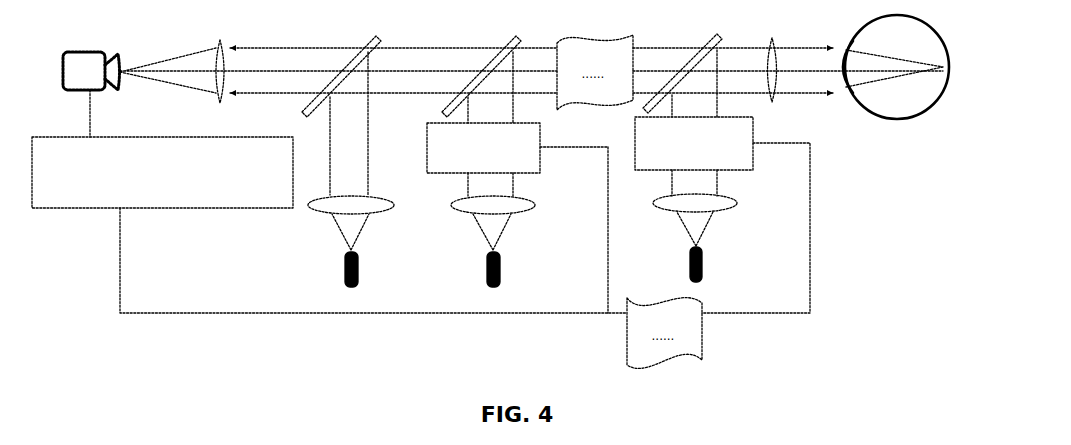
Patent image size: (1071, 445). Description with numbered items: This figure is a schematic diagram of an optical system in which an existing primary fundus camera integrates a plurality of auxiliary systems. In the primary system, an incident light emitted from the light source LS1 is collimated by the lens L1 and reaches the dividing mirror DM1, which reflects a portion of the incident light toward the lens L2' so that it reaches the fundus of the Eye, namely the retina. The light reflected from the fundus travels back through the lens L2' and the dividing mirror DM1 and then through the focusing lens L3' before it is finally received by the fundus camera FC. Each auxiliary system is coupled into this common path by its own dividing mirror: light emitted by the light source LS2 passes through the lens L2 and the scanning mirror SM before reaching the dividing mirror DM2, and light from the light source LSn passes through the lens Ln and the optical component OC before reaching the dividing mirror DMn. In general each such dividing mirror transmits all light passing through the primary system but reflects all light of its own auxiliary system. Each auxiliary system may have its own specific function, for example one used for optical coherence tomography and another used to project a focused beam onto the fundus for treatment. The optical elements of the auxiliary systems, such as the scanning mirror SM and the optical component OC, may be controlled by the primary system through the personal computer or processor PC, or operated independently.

The fundus camera FC is at (110, 78).
The personal computer (PC) or processor PC is at (329, 225).
The focusing lens L3' is at (220, 61).
The dividing mirror DM1 is at (345, 107).
The dividing mirror DM2 is at (483, 107).
The dividing mirror DMn is at (685, 106).
The scanning mirror SM is at (517, 148).
The optical component OC is at (722, 215).
The lens L1 is at (366, 206).
The lens L2 is at (508, 206).
The lens Ln is at (711, 204).
The light source LS1 is at (362, 251).
The light source LS2 is at (503, 251).
The light source LSn is at (706, 247).
The lens L2' is at (773, 61).
The fundus (eye) Eye is at (896, 84).